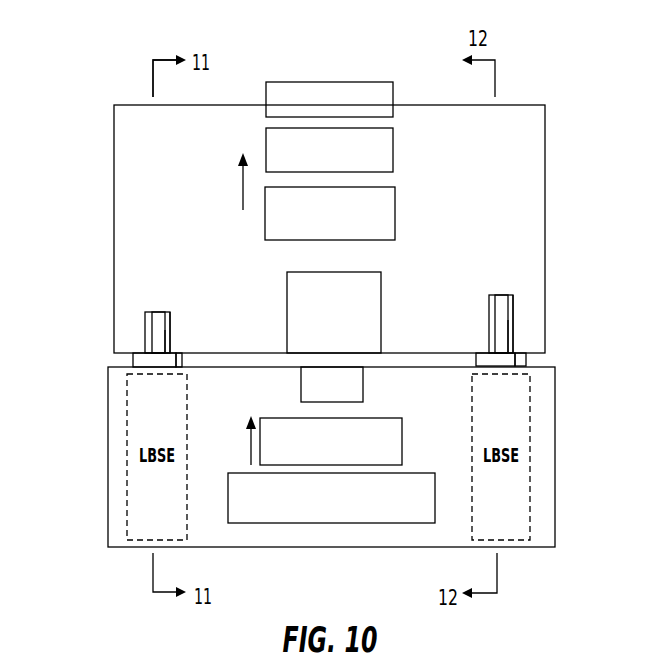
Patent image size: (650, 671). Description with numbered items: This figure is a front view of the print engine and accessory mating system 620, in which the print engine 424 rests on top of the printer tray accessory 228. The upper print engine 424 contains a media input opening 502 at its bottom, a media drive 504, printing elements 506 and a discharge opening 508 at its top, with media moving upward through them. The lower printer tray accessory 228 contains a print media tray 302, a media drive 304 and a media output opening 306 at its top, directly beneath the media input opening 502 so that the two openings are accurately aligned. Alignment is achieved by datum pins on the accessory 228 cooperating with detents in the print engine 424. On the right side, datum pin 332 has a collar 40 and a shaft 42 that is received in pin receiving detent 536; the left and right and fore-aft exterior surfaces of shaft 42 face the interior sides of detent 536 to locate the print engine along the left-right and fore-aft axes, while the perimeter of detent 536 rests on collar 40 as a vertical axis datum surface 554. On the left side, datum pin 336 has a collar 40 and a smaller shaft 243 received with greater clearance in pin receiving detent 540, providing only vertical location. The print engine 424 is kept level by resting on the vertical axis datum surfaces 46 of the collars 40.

The print engine 424 is at (76, 118).
The print engine and accessory mating system 620 is at (233, 65).
The discharge opening 508 is at (393, 92).
The printing elements 506 is at (393, 145).
The media drive 504 is at (395, 213).
The media input opening 502 is at (381, 325).
The shaft 243 is at (155, 312).
The pin receiving detent 540 is at (145, 327).
The datum pin 336 is at (170, 333).
The vertical axis datum surface 554 is at (178, 340).
The shaft 42 is at (502, 302).
The pin receiving detent 536 is at (512, 305).
The datum pin 332 is at (508, 333).
The collar 40 is at (133, 361).
The vertical axis datum surface 46 is at (178, 347).
The printer tray accessory 228 is at (84, 411).
The media output opening 306 is at (363, 383).
The media drive 304 is at (403, 453).
The print media tray 302 is at (348, 523).